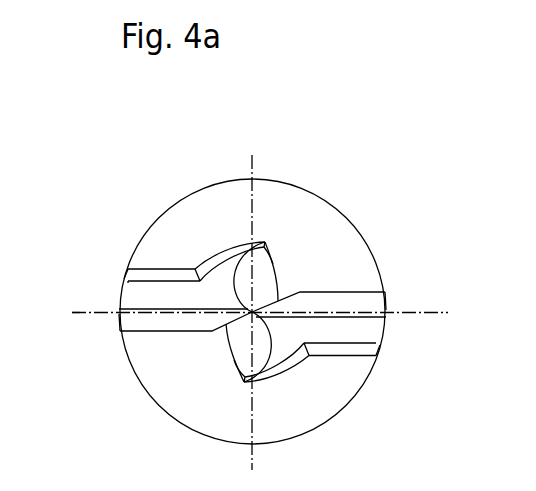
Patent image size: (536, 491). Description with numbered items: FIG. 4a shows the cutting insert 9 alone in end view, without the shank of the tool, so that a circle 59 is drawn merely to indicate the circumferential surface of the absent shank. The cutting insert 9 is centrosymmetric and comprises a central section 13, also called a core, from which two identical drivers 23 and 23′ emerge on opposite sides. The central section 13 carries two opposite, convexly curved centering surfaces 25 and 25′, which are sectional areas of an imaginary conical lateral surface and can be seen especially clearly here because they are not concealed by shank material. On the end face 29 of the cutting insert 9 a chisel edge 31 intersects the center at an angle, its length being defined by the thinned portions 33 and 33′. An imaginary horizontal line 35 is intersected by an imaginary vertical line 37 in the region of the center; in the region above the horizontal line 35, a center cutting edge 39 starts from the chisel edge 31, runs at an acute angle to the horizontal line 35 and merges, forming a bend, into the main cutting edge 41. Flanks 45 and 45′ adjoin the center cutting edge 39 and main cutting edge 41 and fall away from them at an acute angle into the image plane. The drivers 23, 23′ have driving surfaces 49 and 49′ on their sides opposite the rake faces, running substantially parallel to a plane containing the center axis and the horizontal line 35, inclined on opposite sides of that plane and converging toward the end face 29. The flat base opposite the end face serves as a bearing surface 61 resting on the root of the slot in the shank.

The cutting insert 9 is at (386, 292).
The central section 13 is at (259, 242).
The driver 23 is at (366, 287).
The driver 23′ is at (120, 327).
The centering surface 25 is at (282, 366).
The centering surface 25′ is at (222, 254).
The end face 29 is at (219, 302).
The chisel edge 31 is at (226, 333).
The thinned portion 33 is at (268, 252).
The thinned portion 33′ is at (238, 376).
The imaginary horizontal line 35 is at (427, 311).
The imaginary vertical line 37 is at (253, 456).
The center cutting edge 39 is at (286, 288).
The main cutting edge 41 is at (330, 291).
The flank 45 is at (388, 318).
The flank 45′ is at (150, 323).
The driving surface 49 is at (362, 349).
The driving surface 49′ is at (140, 268).
The circle 59 is at (308, 186).
The bearing surface 61 is at (40, 351).